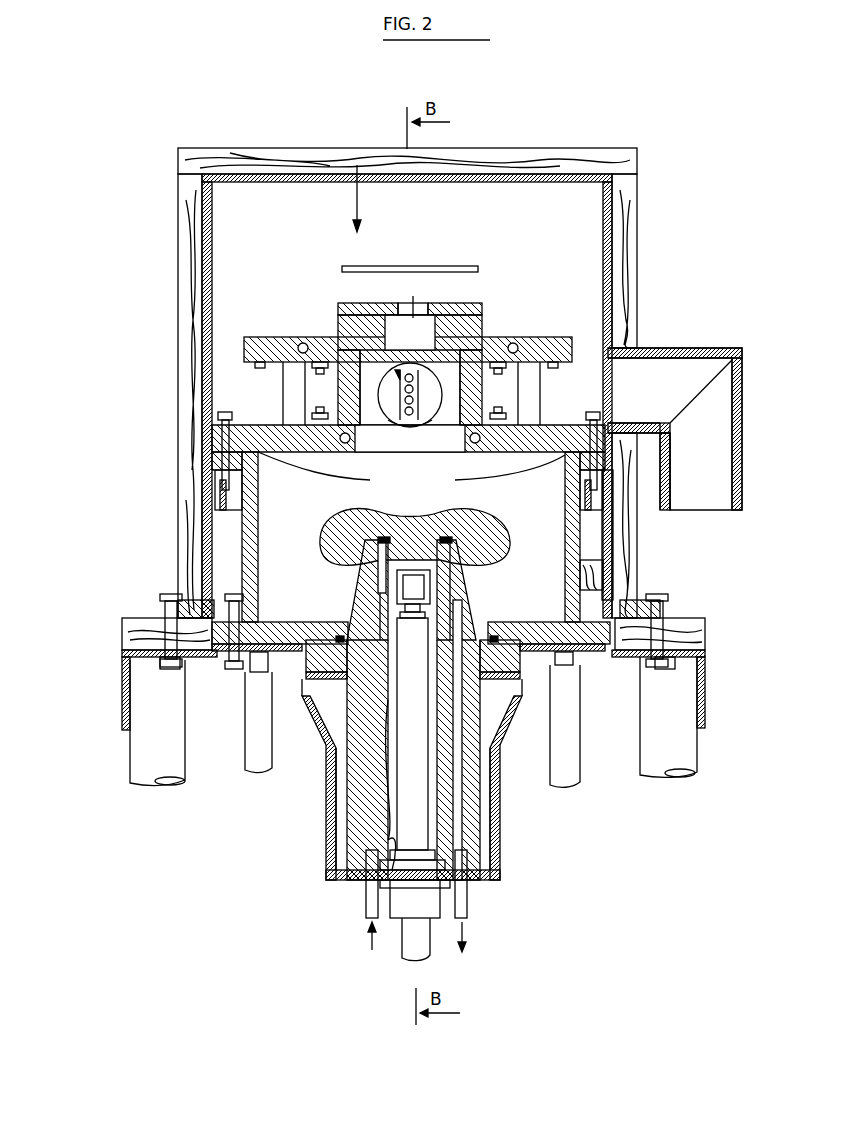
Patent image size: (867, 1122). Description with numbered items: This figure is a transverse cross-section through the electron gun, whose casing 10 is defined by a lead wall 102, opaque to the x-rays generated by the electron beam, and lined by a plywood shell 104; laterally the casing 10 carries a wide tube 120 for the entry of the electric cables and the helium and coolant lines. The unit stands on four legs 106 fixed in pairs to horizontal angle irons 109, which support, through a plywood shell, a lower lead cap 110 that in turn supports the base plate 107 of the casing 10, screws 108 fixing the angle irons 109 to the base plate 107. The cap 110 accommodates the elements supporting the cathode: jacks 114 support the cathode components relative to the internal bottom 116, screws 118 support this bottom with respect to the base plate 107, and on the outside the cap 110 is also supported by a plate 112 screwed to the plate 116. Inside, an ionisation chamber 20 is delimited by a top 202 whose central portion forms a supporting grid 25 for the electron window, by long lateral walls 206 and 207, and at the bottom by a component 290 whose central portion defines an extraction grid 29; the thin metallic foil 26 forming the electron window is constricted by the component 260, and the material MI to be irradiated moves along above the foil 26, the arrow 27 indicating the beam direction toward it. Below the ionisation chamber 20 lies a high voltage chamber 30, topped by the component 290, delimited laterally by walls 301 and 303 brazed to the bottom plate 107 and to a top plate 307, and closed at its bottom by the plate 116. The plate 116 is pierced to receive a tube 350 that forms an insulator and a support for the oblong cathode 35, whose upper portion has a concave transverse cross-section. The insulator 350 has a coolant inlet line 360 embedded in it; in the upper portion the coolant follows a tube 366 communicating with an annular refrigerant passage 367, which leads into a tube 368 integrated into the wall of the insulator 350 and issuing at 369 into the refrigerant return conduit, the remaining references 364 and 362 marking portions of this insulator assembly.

The casing 10 is at (128, 160).
The plywood shell 104 is at (235, 160).
The lead wall 102 is at (298, 175).
The light beam direction 27 is at (357, 165).
The material to be irradiated MI is at (415, 268).
The component constricting the metallic foil 260 is at (338, 305).
The thin metallic foil 26 is at (398, 305).
The supporting grid 25 is at (478, 322).
The top 202 is at (246, 345).
The long lateral wall 206 is at (340, 385).
The long lateral wall 207 is at (484, 384).
The component closing the ionisation chamber 290 is at (214, 431).
The wall of the high voltage chamber 301 is at (243, 497).
The wall of the high voltage chamber 303 is at (570, 528).
The top plate 307 is at (592, 475).
The wide tube 120 is at (720, 458).
The extraction grid 29 is at (382, 448).
The high voltage chamber 30 is at (432, 497).
The ionisation chamber 20 is at (432, 422).
The cathode 35 is at (490, 540).
The annular refrigerant passage 367 is at (395, 545).
The coolant tube 366 is at (380, 570).
The refrigerant return tube 368 is at (452, 610).
The internal bottom 116 is at (293, 640).
The base plate 107 is at (150, 618).
The screws 108 is at (170, 598).
The horizontal angle irons 109 is at (124, 695).
The screws 118 is at (230, 662).
The plate 112 is at (298, 682).
The legs 106 is at (138, 755).
The jacks 114 is at (255, 760).
The lower lead cap 110 is at (333, 785).
The stem channel 364 is at (360, 790).
The stem bottom 362 is at (330, 850).
The coolant inlet line 360 is at (368, 905).
The tube forming an insulator 350 is at (470, 780).
The refrigerant outlet 369 is at (468, 905).